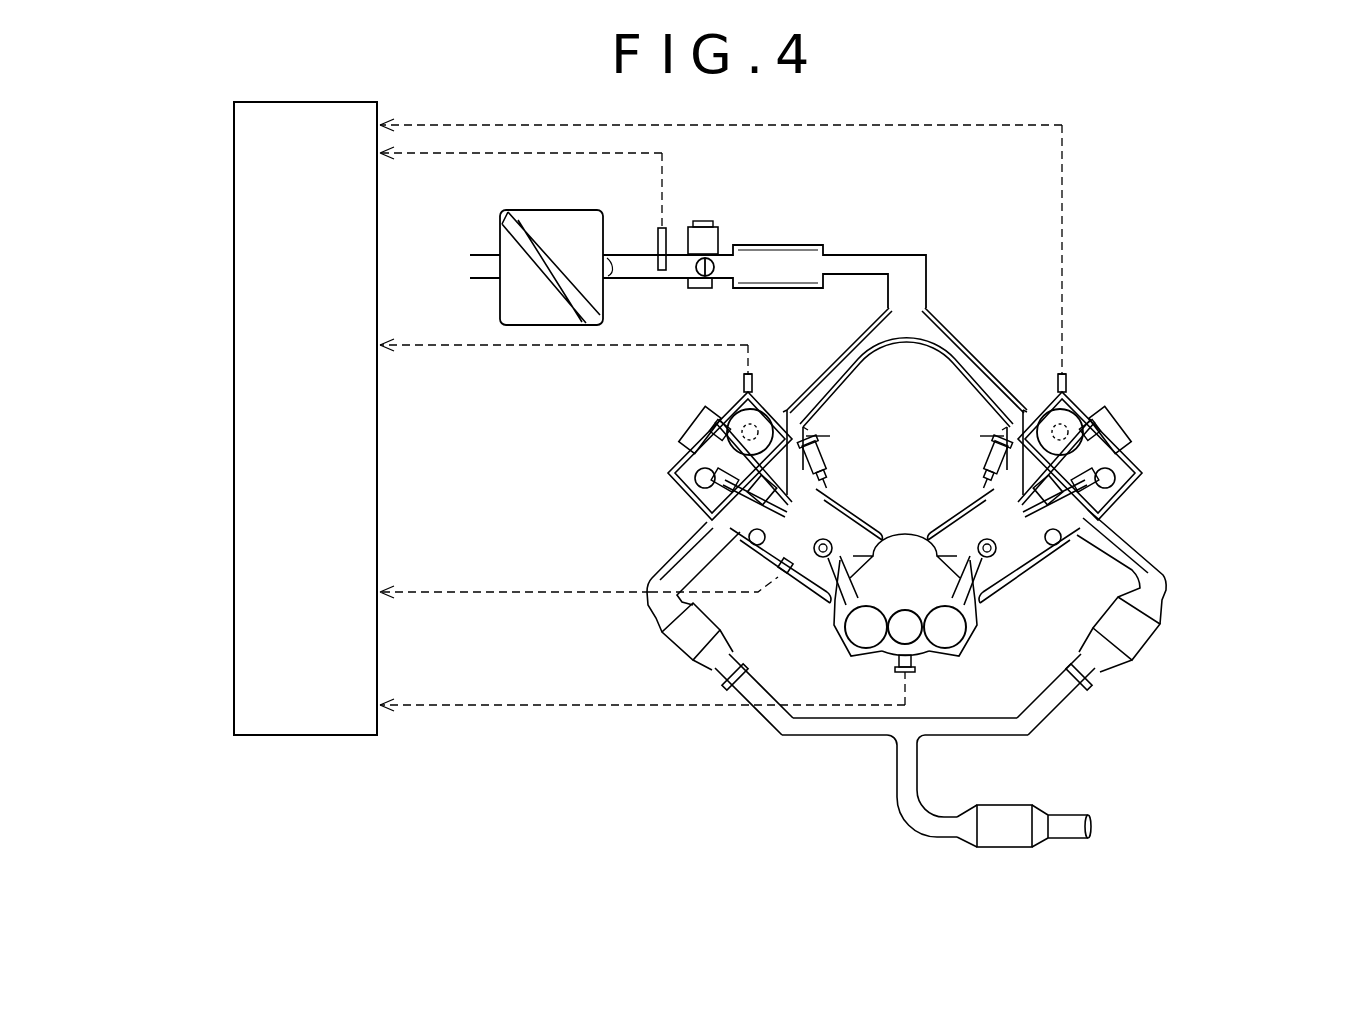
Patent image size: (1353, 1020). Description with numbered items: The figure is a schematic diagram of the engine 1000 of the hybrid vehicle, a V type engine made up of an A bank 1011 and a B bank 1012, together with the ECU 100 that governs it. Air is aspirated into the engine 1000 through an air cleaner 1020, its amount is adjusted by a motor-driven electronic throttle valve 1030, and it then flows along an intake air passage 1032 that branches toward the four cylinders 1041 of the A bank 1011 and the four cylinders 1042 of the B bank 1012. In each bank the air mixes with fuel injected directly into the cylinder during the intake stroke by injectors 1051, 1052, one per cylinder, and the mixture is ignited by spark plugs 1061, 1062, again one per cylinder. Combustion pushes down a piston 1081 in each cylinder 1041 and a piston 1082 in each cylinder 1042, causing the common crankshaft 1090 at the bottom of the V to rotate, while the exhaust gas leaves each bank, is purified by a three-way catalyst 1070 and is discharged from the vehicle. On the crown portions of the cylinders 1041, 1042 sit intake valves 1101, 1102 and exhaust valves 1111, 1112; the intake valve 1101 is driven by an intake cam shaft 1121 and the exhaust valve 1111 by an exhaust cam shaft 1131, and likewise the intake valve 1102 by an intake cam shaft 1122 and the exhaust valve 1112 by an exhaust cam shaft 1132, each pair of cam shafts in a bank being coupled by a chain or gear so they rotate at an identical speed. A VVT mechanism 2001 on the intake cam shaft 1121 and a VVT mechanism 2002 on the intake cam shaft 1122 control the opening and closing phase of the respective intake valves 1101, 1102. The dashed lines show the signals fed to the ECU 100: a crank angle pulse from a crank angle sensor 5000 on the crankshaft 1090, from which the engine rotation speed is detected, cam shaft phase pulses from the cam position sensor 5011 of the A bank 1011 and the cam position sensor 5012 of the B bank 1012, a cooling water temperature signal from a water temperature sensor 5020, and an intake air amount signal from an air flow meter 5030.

The ECU 100 is at (234, 607).
The engine 1000 is at (974, 232).
The A bank 1011 is at (606, 444).
The B bank 1012 is at (1198, 380).
The air cleaner 1020 is at (578, 192).
The throttle valve 1030 is at (716, 246).
The intake air passage 1032 is at (900, 255).
The cylinder 1041 is at (831, 448).
The cylinder 1042 is at (988, 480).
The injector 1051 is at (867, 418).
The injector 1052 is at (992, 440).
The spark plug 1061 is at (692, 415).
The spark plug 1062 is at (1122, 427).
The three-way catalyst 1070 is at (672, 648).
The piston 1081 is at (905, 567).
The piston 1082 is at (950, 540).
The crankshaft 1090 is at (925, 655).
The intake valve 1101 is at (784, 412).
The intake valve 1102 is at (1026, 410).
The exhaust valve 1111 is at (712, 516).
The exhaust valve 1112 is at (1098, 516).
The intake cam shaft 1121 is at (742, 420).
The intake cam shaft 1122 is at (1072, 418).
The exhaust cam shaft 1131 is at (695, 480).
The exhaust cam shaft 1132 is at (1115, 479).
The VVT mechanism 2001 is at (742, 386).
The VVT mechanism 2002 is at (1072, 386).
The crank angle sensor 5000 is at (912, 672).
The cam position sensor 5011 is at (752, 345).
The cam position sensor 5012 is at (1058, 362).
The water temperature sensor 5020 is at (787, 576).
The air flow meter 5030 is at (666, 228).